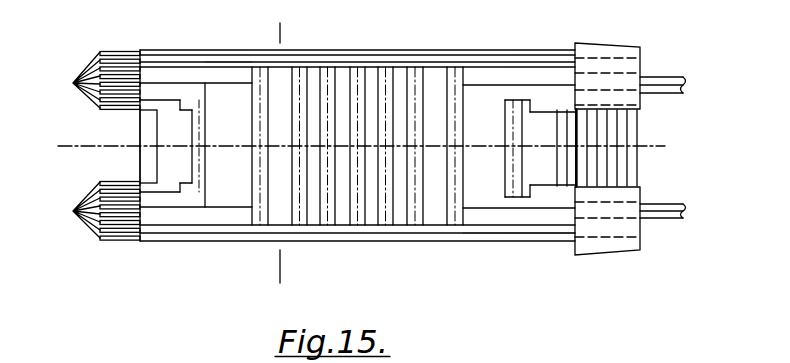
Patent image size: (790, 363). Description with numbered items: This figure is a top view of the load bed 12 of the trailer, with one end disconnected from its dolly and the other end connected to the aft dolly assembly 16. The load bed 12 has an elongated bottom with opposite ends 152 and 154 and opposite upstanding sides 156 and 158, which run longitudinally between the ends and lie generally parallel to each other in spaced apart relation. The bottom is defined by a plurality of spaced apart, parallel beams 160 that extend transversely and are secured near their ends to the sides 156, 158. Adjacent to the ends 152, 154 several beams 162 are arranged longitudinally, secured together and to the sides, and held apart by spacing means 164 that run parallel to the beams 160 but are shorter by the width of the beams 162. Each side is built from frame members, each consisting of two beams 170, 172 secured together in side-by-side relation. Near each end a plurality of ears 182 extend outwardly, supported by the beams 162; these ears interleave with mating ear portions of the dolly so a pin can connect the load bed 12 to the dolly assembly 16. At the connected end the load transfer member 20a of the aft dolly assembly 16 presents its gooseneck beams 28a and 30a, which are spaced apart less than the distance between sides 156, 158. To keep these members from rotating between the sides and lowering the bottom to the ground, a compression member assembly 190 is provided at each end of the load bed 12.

The load bed 12 is at (520, 46).
The aft dolly assembly 16 is at (275, 33).
The load transfer member 20a is at (679, 73).
The gooseneck beam 28a is at (647, 74).
The gooseneck beam 30a is at (648, 206).
The end 152 is at (140, 153).
The end 154 is at (577, 143).
The side 156 is at (463, 50).
The side 158 is at (378, 247).
The beams 160 is at (393, 93).
The beams 162 is at (168, 107).
The spacing means 164 is at (157, 167).
The beam 170 is at (312, 55).
The beam 172 is at (343, 62).
The ears 182 is at (66, 83).
The compression member assembly 190 is at (609, 56).